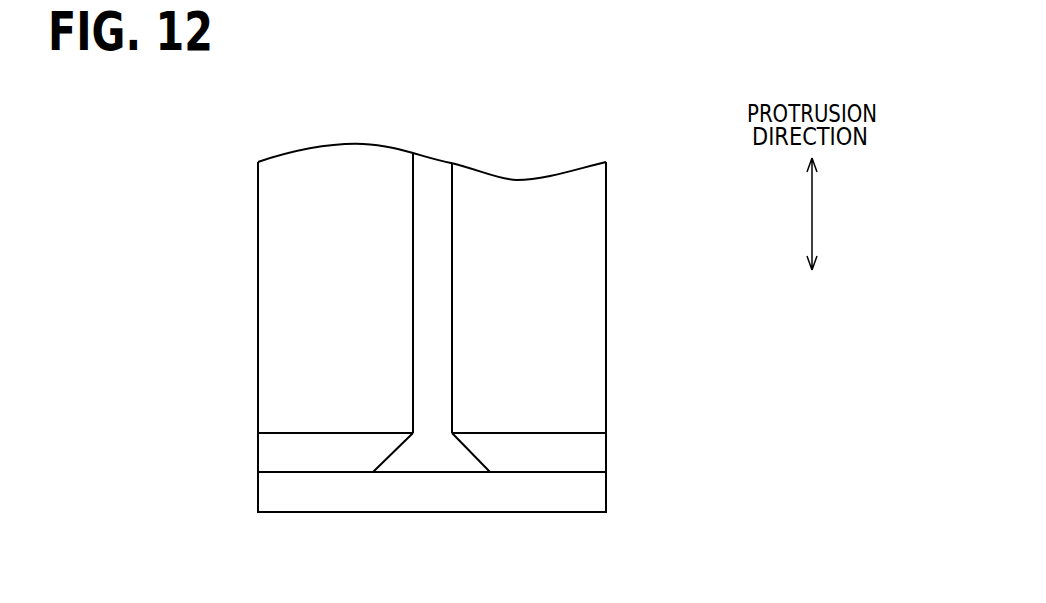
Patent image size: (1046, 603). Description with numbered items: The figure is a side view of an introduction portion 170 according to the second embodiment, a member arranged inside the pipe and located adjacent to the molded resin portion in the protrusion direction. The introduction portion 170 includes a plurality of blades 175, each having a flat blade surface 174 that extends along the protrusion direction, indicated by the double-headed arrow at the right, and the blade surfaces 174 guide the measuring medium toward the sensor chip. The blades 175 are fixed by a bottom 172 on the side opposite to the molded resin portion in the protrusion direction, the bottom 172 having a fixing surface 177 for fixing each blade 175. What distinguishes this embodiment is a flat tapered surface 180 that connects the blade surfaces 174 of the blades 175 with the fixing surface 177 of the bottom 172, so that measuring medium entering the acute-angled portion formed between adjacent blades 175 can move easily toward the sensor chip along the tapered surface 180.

The introduction portion 170 is at (625, 198).
The bottom 172 is at (587, 493).
The blade surface 174 is at (452, 257).
The blade 175 is at (258, 297).
The fixing surface 177 is at (297, 470).
The tapered surface 180 is at (480, 453).